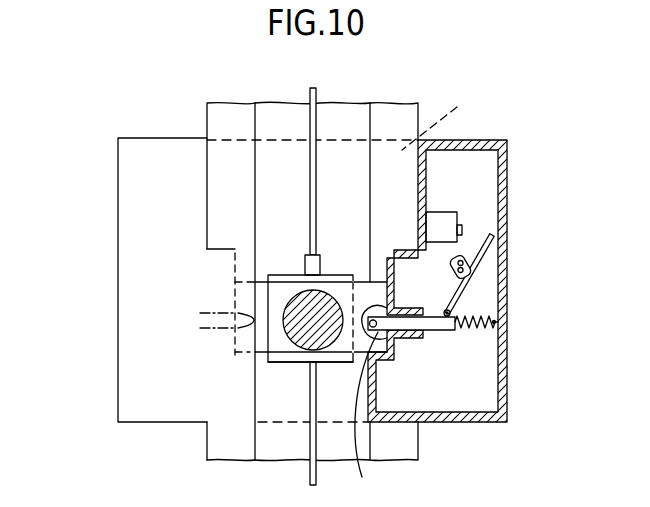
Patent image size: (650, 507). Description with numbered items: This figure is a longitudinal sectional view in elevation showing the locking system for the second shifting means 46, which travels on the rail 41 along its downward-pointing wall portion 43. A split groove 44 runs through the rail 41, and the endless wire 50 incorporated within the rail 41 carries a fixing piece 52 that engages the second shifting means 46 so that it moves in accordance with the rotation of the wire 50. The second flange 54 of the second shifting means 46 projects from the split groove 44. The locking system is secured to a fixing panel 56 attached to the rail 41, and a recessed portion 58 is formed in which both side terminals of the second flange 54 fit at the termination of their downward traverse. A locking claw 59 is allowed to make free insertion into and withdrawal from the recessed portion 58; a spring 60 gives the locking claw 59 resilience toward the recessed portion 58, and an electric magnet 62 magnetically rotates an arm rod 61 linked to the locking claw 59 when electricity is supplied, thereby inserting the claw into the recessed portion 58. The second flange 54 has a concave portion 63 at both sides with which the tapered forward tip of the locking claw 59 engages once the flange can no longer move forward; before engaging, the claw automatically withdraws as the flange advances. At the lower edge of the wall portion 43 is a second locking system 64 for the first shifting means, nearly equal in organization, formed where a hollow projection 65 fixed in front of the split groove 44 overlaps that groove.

The rail 41 is at (235, 103).
The split groove 44 is at (257, 128).
The endless wire 50 is at (313, 127).
The wall portion 43 is at (405, 112).
The fixing panel 56 is at (446, 118).
The locking system 64 is at (188, 135).
The hollow projection 65 is at (505, 162).
The electric magnet 62 is at (447, 222).
The arm rod 61 is at (482, 258).
The spring 60 is at (495, 322).
The locking claw 59 is at (430, 323).
The fixing piece 52 is at (305, 265).
The second flange 54 is at (275, 308).
The second shifting means 46 is at (286, 366).
The concave portion 63 is at (363, 418).
The recessed portion 58 is at (380, 336).